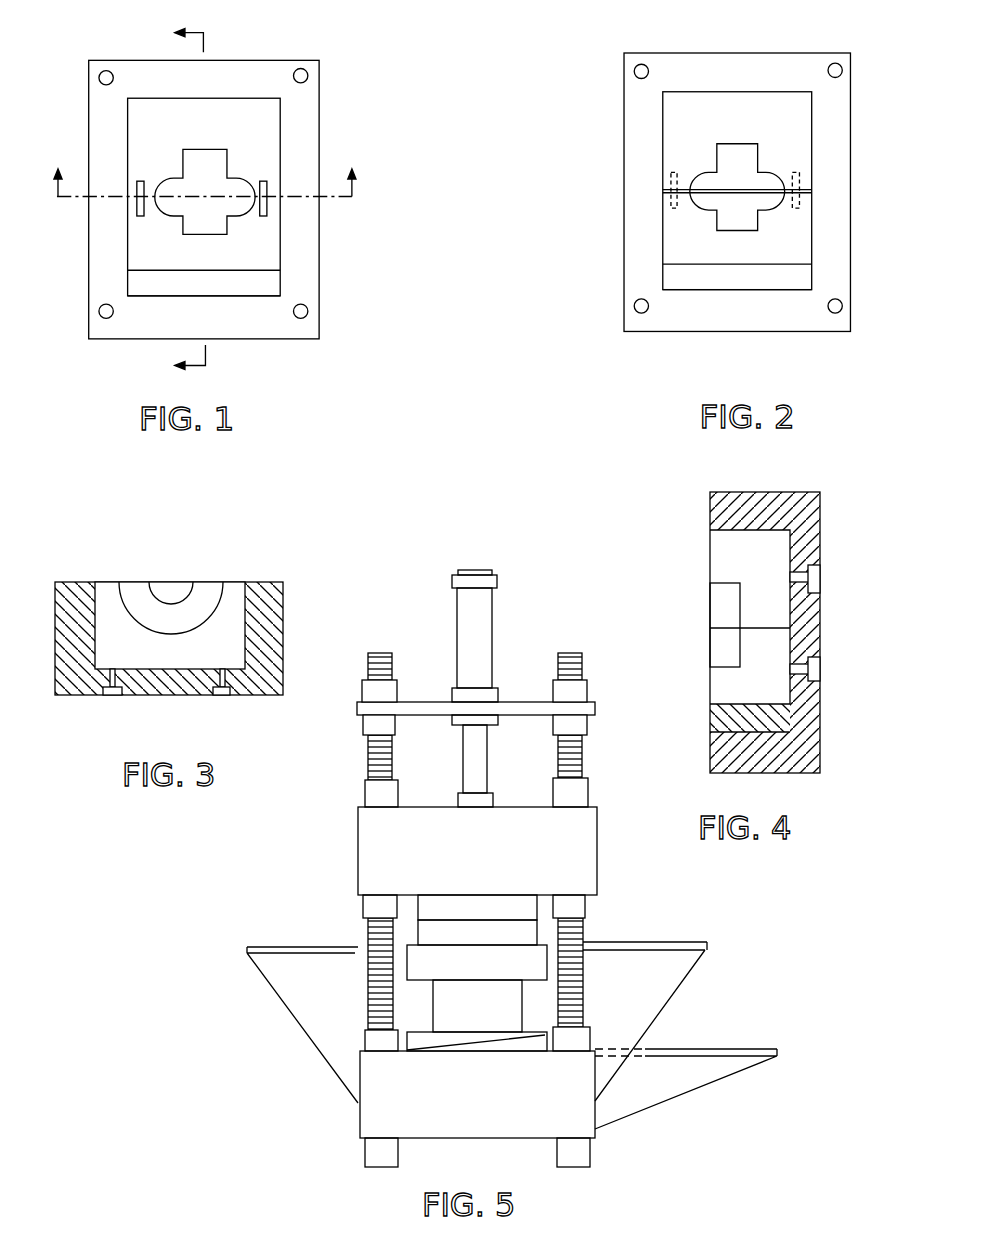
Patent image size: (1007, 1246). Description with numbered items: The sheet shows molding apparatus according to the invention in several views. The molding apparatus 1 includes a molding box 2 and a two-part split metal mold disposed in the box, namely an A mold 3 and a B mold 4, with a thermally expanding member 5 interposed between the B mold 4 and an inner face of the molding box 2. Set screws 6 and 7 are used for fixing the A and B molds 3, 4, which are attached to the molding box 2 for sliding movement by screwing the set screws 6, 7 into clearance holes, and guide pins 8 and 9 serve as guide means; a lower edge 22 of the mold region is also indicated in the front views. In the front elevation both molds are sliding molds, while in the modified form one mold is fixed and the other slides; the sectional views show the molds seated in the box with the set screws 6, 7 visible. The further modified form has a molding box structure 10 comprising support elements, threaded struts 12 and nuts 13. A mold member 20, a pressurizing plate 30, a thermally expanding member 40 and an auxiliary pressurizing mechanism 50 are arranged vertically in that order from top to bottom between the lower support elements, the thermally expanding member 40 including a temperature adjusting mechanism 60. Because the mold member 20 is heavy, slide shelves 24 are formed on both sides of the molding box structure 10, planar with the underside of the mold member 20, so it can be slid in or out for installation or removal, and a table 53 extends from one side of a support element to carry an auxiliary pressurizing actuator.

In FIG. 1, the molding apparatus 1 is at (216, 210).
In FIG. 2, the molding apparatus 1 is at (741, 198).
In FIG. 3, the molding apparatus 1 is at (172, 634).
In FIG. 4, the molding apparatus 1 is at (762, 653).
In FIG. 1, the molding box 2 is at (297, 110).
In FIG. 2, the molding box 2 is at (779, 66).
In FIG. 4, the molding box 2 is at (713, 753).
In FIG. 1, the A mold 3 is at (142, 134).
In FIG. 2, the A mold 3 is at (668, 127).
In FIG. 3, the A mold 3 is at (106, 596).
In FIG. 4, the A mold 3 is at (720, 564).
In FIG. 1, the B mold 4 is at (143, 238).
In FIG. 2, the B mold 4 is at (670, 235).
In FIG. 4, the B mold 4 is at (728, 677).
In FIG. 1, the thermally expanding member 5 is at (263, 277).
In FIG. 2, the thermally expanding member 5 is at (800, 268).
In FIG. 4, the thermally expanding member 5 is at (712, 726).
In FIG. 4, the set screw 6 is at (822, 673).
In FIG. 3, the set screw 7 is at (112, 697).
In FIG. 4, the set screw 7 is at (822, 578).
In FIG. 1, the guide pin 8 is at (133, 197).
In FIG. 2, the guide pin 8 is at (668, 187).
In FIG. 1, the guide pin 9 is at (258, 187).
In FIG. 2, the guide pin 9 is at (790, 173).
In FIG. 5, the molding box structure 10 is at (512, 872).
In FIG. 5, the threaded strut 12 is at (385, 652).
In FIG. 5, the nut 13 is at (362, 690).
In FIG. 5, the mold member 20 is at (548, 908).
In FIG. 1, the die bottom edge 22 is at (240, 292).
In FIG. 2, the die bottom edge 22 is at (735, 283).
In FIG. 5, the slide shelf 24 is at (247, 947).
In FIG. 5, the pressurizing plate 30 is at (416, 941).
In FIG. 5, the thermally expanding member 40 is at (533, 1005).
In FIG. 5, the auxiliary pressurizing mechanism 50 is at (418, 1026).
In FIG. 5, the table 53 is at (705, 1049).
In FIG. 5, the temperature adjusting mechanism 60 is at (432, 997).